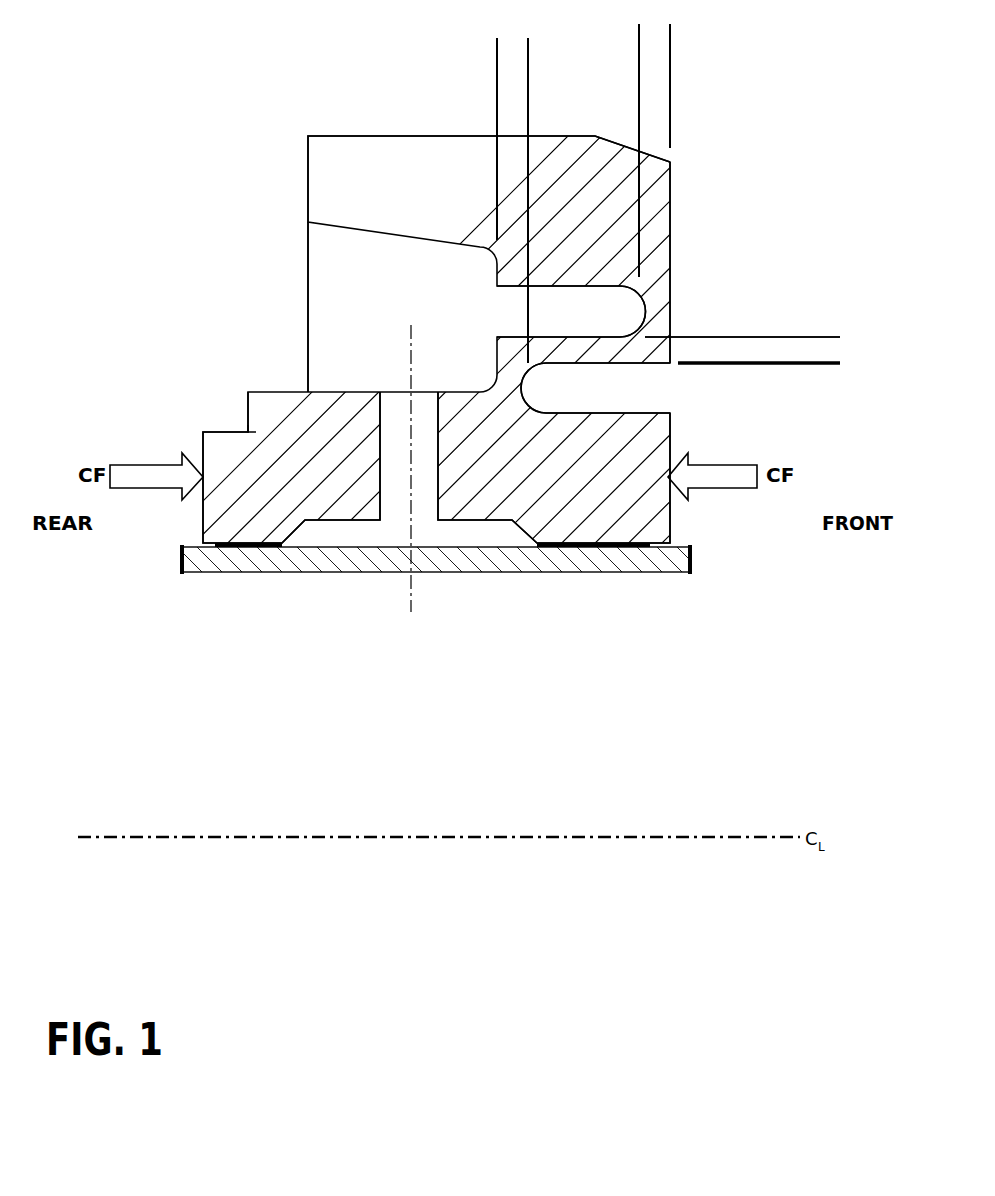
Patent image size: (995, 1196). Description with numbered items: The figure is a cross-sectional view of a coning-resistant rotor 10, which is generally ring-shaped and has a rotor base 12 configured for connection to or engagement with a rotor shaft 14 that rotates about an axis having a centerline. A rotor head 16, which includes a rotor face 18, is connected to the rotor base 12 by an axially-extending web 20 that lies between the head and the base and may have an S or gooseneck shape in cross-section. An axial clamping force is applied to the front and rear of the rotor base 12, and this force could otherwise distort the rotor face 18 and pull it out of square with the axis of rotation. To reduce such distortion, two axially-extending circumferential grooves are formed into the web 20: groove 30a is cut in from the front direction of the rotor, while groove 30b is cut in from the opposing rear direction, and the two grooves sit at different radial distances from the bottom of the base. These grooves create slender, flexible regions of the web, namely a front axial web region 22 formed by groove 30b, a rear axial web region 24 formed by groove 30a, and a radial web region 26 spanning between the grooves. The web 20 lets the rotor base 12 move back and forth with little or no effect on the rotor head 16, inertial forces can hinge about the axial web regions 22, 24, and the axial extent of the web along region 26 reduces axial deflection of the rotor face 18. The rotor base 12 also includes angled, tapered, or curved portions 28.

The coning-resistant rotor 10 is at (298, 82).
The rotor base 12 is at (671, 517).
The rotor shaft 14 is at (599, 558).
The rotor head 16 is at (307, 186).
The rotor face 18 is at (673, 243).
The axially-extending web 20 is at (691, 326).
The front axial web region 22 is at (590, 35).
The rear axial web region 24 is at (575, 55).
The radial web region 26 is at (828, 413).
The angled, tapered, or curved portion 28 is at (715, 615).
The front circumferential groove 30a is at (606, 393).
The rear circumferential groove 30b is at (546, 319).